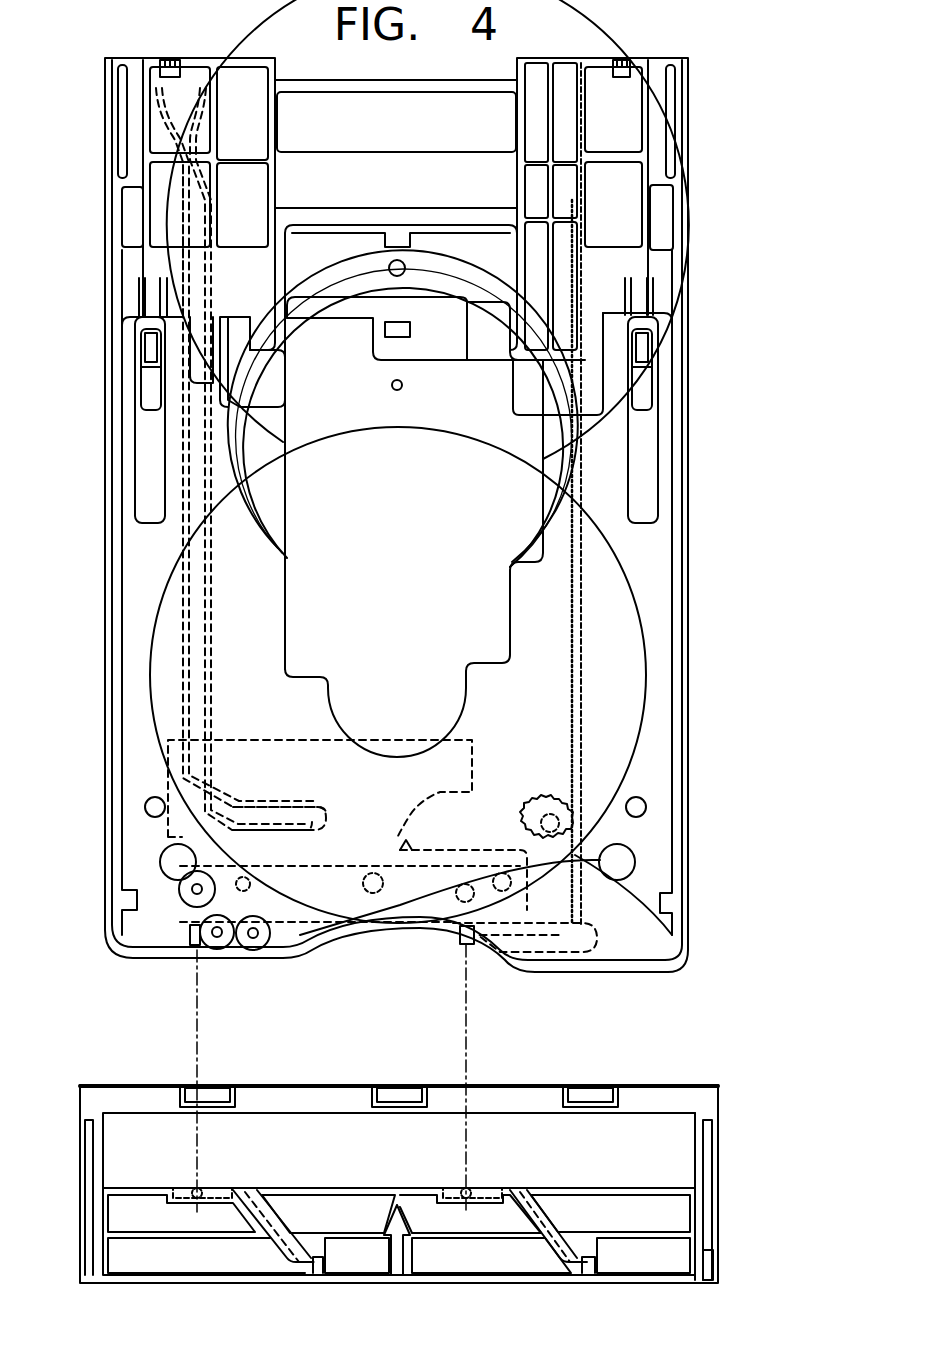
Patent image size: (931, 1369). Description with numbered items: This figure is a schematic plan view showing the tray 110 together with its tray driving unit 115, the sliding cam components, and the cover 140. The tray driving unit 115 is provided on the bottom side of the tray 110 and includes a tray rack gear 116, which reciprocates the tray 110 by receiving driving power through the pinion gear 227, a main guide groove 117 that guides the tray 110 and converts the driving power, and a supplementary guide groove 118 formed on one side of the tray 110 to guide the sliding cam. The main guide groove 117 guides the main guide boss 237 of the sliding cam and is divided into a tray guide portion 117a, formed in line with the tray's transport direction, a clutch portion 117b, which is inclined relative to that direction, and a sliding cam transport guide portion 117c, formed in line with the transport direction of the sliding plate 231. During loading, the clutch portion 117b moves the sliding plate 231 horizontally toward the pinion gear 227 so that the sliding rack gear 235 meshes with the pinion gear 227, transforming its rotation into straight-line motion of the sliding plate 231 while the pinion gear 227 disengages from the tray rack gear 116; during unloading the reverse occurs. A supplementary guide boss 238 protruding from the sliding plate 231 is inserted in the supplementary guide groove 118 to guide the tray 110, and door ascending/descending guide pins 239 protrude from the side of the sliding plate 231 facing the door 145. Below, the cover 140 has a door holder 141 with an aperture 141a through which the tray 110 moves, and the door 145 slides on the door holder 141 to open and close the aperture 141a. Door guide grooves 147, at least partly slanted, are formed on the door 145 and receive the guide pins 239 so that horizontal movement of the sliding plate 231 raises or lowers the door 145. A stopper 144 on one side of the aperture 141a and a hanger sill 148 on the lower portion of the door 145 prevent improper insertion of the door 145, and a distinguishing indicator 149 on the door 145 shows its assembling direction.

The tray 110 is at (692, 702).
The tray driving unit 115 is at (455, 495).
The tray rack gear 116 is at (570, 552).
The main guide groove 117 is at (205, 568).
The tray guide portion 117a is at (287, 500).
The clutch portion 117b is at (262, 818).
The sliding cam transport guide portion 117c is at (270, 857).
The supplementary guide groove 118 is at (563, 937).
The pinion gear 227 is at (600, 860).
The sliding plate 231 is at (365, 906).
The sliding rack gear 235 is at (683, 931).
The main guide boss 237 is at (205, 797).
The supplementary guide boss 238 is at (463, 895).
The door ascending/descending guide pins 239 is at (192, 937).
The cover 140 is at (738, 1160).
The door holder 141 is at (722, 1173).
The aperture 141a is at (533, 1169).
The stopper 144 is at (714, 1250).
The door 145 is at (618, 1265).
The door guide grooves 147 is at (268, 1257).
The hanger sill 148 is at (95, 1280).
The distinguishing indicator 149 is at (397, 1265).